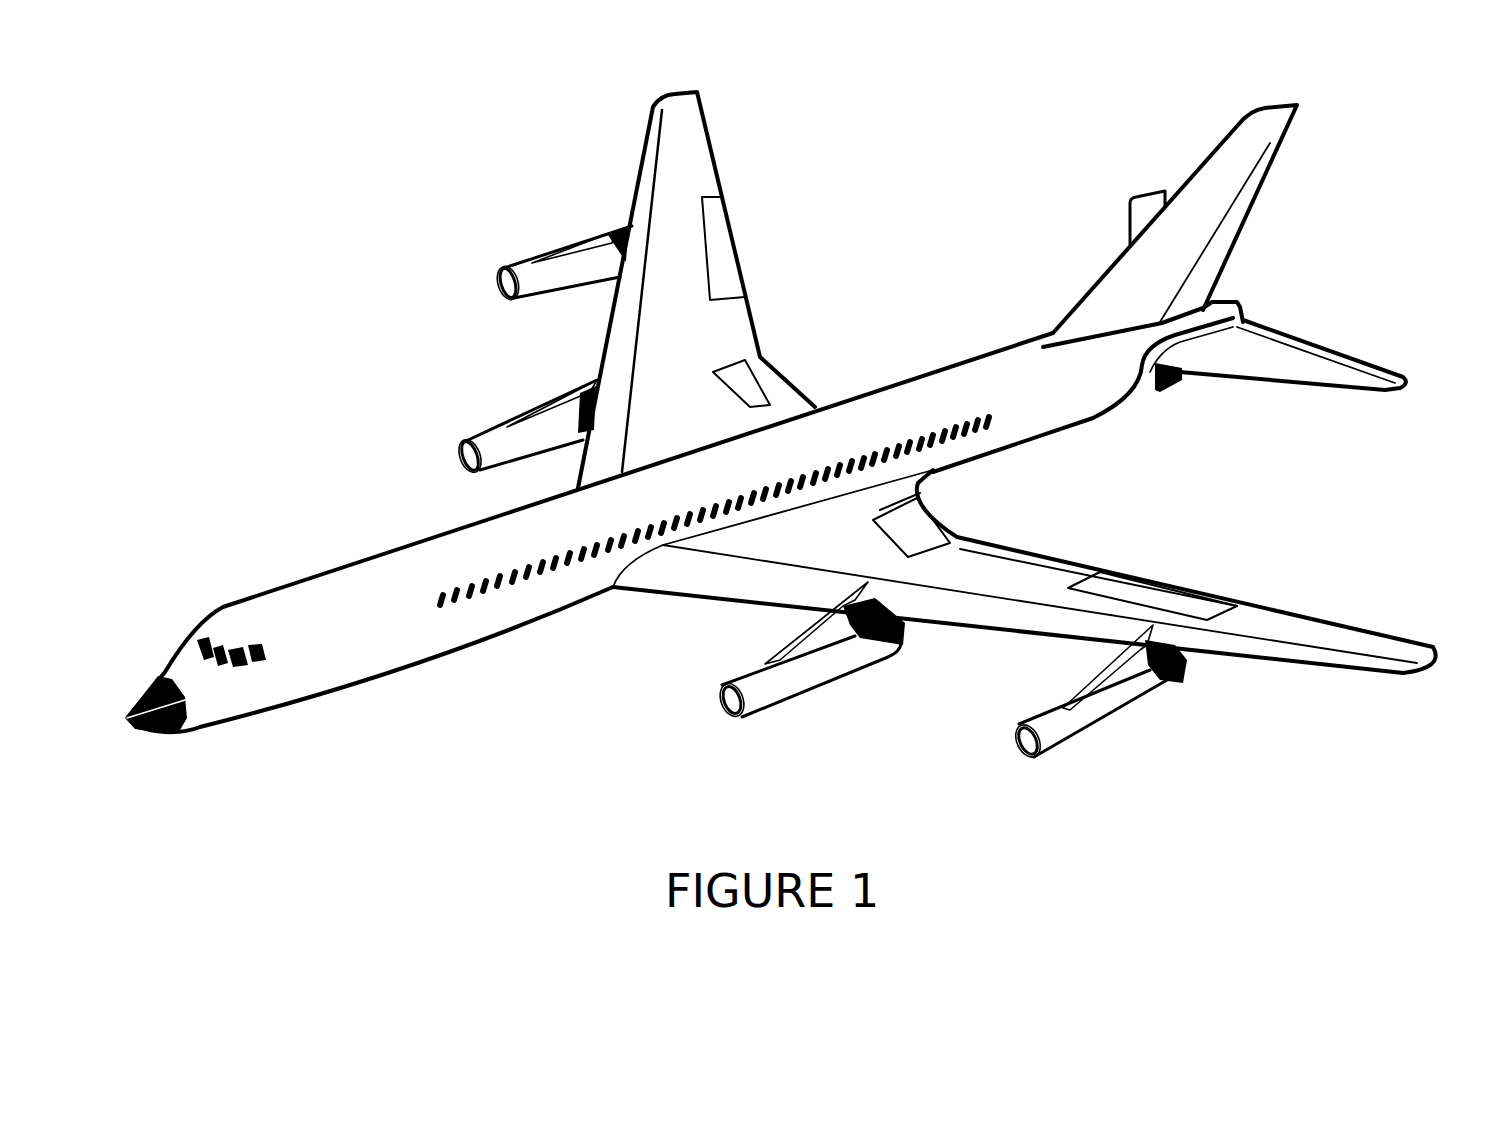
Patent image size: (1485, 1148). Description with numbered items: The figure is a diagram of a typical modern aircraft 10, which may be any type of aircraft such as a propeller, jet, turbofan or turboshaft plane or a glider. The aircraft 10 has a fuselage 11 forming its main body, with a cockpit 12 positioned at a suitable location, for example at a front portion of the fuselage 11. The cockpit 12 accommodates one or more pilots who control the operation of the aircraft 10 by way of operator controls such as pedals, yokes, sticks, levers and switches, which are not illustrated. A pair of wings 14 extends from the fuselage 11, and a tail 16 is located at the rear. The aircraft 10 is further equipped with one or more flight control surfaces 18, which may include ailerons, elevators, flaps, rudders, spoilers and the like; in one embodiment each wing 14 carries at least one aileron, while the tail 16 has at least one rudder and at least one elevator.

The aircraft 10 is at (221, 199).
The fuselage 11 is at (520, 679).
The cockpit 12 is at (191, 612).
The wings 14 is at (610, 175).
The tail 16 is at (1187, 148).
The flight control surfaces 18 is at (801, 362).